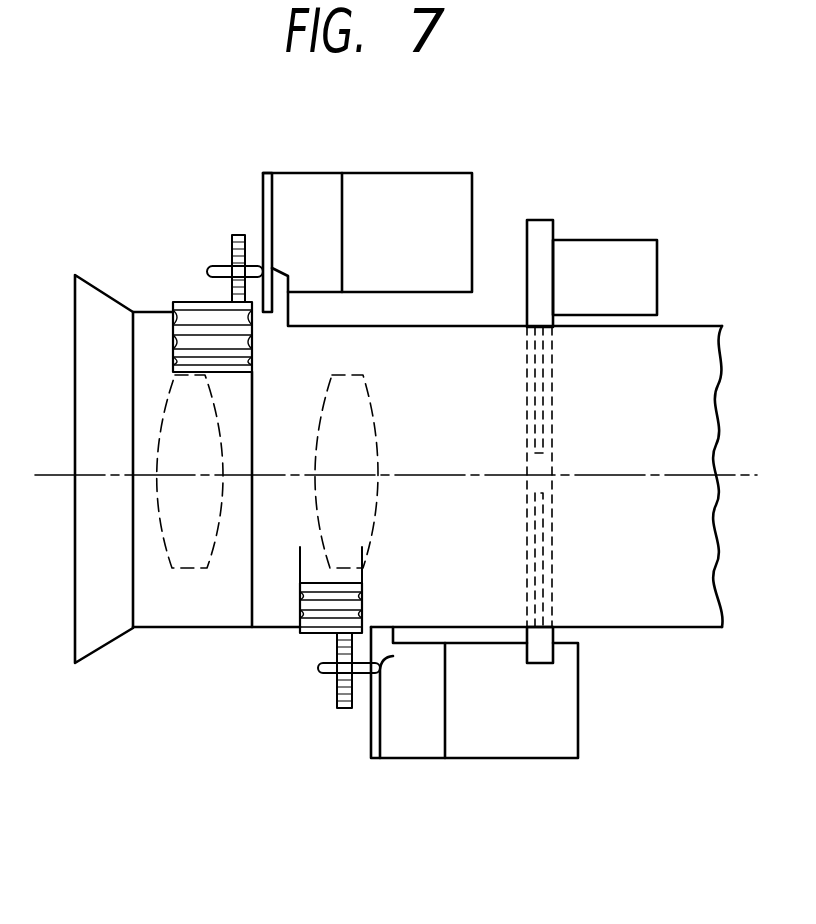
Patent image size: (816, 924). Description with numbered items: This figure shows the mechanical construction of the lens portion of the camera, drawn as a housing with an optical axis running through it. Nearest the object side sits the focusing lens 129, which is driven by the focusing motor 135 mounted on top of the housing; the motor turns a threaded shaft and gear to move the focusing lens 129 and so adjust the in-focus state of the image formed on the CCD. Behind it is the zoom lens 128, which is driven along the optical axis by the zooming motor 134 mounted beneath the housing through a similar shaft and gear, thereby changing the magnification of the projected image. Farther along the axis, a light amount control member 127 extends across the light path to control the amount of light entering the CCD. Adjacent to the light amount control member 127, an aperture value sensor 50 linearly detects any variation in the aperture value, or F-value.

The aperture value sensor 50 is at (636, 250).
The light amount control member 127 is at (547, 578).
The zoom lens 128 is at (297, 598).
The focusing lens 129 is at (188, 570).
The zooming motor 134 is at (471, 747).
The focusing motor 135 is at (440, 182).